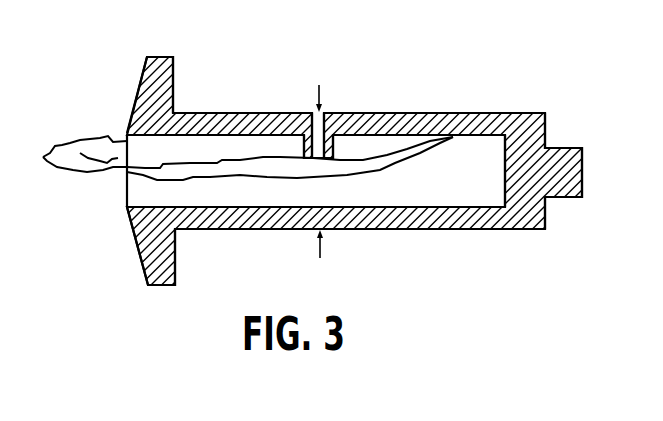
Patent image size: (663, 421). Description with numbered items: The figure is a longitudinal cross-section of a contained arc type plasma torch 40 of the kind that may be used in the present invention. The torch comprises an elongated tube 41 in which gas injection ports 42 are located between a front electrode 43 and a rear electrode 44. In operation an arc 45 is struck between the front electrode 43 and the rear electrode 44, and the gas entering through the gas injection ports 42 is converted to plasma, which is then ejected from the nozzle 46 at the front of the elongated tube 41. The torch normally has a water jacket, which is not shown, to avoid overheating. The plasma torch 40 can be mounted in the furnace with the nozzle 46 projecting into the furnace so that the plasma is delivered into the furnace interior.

The plasma torch 40 is at (114, 86).
The elongated tube 41 is at (403, 122).
The gas injection ports 42 is at (310, 112).
The front electrode 43 is at (262, 223).
The rear electrode 44 is at (455, 125).
The arc 45 is at (73, 143).
The nozzle 46 is at (127, 208).